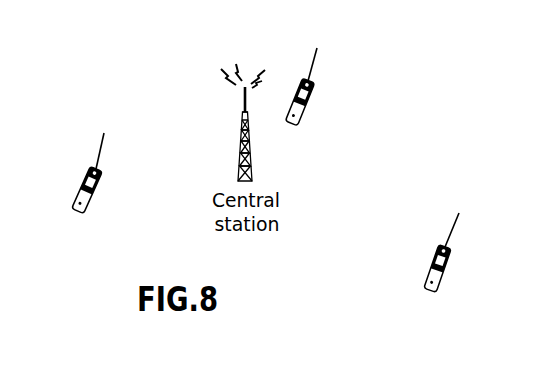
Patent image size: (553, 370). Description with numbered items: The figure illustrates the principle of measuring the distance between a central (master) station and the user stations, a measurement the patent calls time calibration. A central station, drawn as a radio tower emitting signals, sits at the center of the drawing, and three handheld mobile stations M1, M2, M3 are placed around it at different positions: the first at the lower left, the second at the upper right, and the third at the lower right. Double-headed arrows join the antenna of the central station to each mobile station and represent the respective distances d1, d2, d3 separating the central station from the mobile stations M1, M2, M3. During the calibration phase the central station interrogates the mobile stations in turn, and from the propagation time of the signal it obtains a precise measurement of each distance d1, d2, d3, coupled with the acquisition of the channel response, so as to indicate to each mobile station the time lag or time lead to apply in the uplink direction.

The mobile station M1 is at (85, 188).
The mobile station M2 is at (320, 87).
The mobile station M3 is at (464, 252).
The distance d1 is at (235, 93).
The distance d2 is at (314, 50).
The distance d3 is at (252, 96).